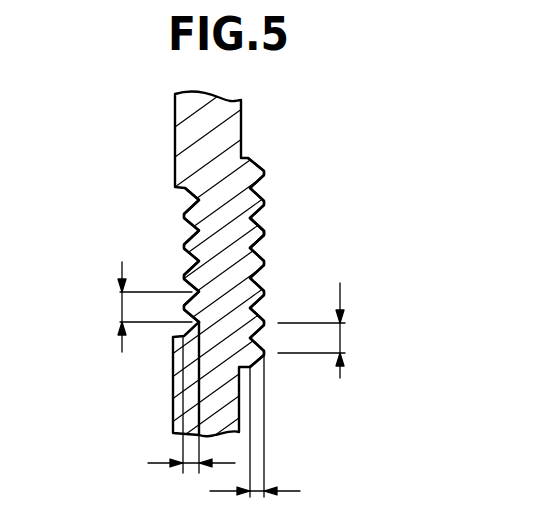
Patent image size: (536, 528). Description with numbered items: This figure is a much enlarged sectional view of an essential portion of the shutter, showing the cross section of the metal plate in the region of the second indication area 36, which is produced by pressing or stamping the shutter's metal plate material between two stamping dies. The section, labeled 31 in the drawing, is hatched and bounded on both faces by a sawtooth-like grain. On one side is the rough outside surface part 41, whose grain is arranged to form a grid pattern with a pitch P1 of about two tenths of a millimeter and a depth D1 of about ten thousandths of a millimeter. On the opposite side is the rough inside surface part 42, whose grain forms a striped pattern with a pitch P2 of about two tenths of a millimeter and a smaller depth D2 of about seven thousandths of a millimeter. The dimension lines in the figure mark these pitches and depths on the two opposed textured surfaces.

The threaded body (nut/screw member) 31 is at (180, 135).
The rough inside surface part 42 is at (194, 229).
The second indication area 36 is at (272, 192).
The rough outside surface part 41 is at (251, 243).
The pitch of the rough outside surface part grain P1 is at (328, 330).
The pitch of the rough inside surface part grain P2 is at (140, 307).
The depth of the rough outside surface part grain D1 is at (255, 439).
The depth of the rough inside surface part grain D2 is at (191, 418).